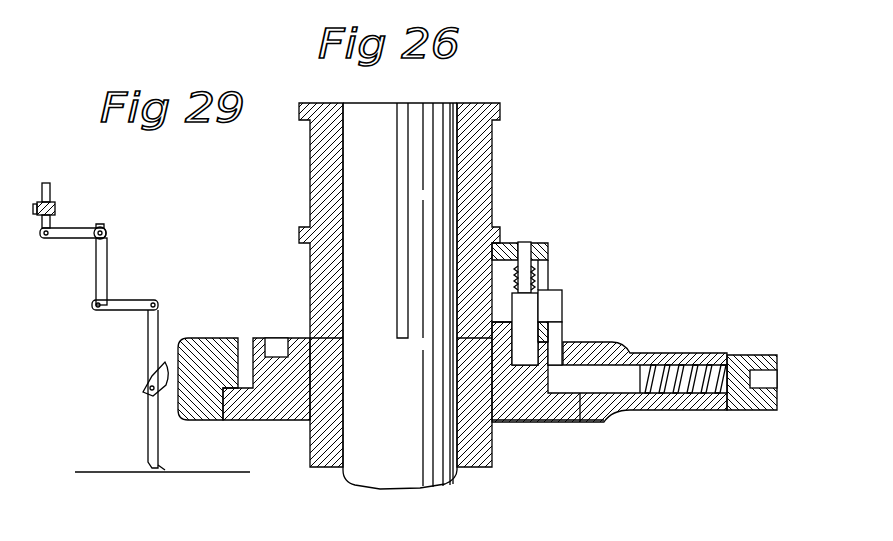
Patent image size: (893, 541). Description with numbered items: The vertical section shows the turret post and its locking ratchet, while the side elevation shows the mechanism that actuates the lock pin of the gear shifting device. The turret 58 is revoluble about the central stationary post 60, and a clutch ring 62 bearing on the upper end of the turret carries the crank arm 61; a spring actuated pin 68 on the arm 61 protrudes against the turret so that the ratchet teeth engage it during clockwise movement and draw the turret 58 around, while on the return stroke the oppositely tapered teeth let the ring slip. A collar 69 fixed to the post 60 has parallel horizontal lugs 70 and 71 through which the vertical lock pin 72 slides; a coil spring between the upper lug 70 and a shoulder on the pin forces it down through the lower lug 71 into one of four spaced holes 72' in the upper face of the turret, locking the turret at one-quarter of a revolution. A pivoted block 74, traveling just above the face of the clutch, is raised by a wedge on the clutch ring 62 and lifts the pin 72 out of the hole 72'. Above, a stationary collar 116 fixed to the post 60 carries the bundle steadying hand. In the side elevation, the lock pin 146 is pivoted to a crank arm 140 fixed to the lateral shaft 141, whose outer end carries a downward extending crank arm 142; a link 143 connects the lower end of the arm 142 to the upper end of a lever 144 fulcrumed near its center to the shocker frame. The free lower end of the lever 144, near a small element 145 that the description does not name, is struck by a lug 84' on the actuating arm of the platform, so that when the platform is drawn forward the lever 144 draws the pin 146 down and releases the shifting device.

In FIG. 26, the stationary collar 116 is at (478, 164).
In FIG. 26, the collar 69 is at (312, 296).
In FIG. 26, the clutch ring 62 is at (222, 338).
In FIG. 26, the holes 72' is at (280, 335).
In FIG. 26, the central post 60 is at (434, 110).
In FIG. 26, the upper lug 70 is at (548, 254).
In FIG. 26, the lock pin 72 is at (534, 251).
In FIG. 26, the pivoted block 74 is at (553, 298).
In FIG. 26, the lower lug 71 is at (548, 330).
In FIG. 26, the spring actuated pin 68 is at (632, 352).
In FIG. 26, the crank arm 61 is at (751, 412).
In FIG. 26, the turret 58 is at (505, 412).
In FIG. 29, the lock pin 146 is at (52, 197).
In FIG. 29, the crank arm 140 is at (72, 238).
In FIG. 29, the lateral shaft 141 is at (107, 232).
In FIG. 29, the crank arm 142 is at (108, 278).
In FIG. 29, the link 143 is at (130, 310).
In FIG. 29, the lever 144 is at (148, 336).
In FIG. 29, the pawl 145 is at (145, 391).
In FIG. 29, the lug 84' is at (181, 457).